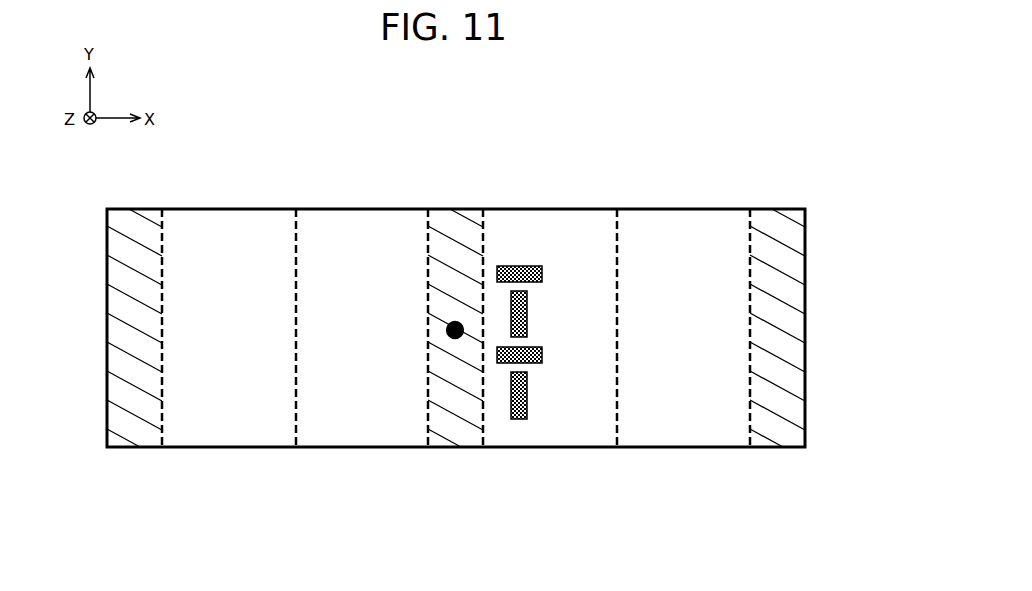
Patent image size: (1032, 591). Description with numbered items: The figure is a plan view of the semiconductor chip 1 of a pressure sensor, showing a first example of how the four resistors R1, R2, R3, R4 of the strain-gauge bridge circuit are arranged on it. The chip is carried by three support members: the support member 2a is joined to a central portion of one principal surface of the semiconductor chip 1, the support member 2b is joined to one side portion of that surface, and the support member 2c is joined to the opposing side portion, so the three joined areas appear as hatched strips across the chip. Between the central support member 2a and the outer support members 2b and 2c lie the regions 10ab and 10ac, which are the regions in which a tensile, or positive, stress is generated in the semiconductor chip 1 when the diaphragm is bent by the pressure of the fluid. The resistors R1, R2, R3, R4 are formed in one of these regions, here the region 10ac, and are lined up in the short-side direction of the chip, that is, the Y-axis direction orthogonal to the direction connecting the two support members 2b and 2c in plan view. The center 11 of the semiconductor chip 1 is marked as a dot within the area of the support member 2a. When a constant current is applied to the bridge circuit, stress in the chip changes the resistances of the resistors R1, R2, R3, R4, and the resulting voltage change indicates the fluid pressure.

The semiconductor chip 1 is at (675, 209).
The support member 2a is at (455, 440).
The support member 2b is at (135, 438).
The support member 2c is at (777, 432).
The region 10ab is at (428, 452).
The region 10ac is at (617, 452).
The center 11 is at (456, 322).
The resistor R1 is at (520, 266).
The resistor R2 is at (527, 312).
The resistor R3 is at (542, 352).
The resistor R4 is at (527, 407).